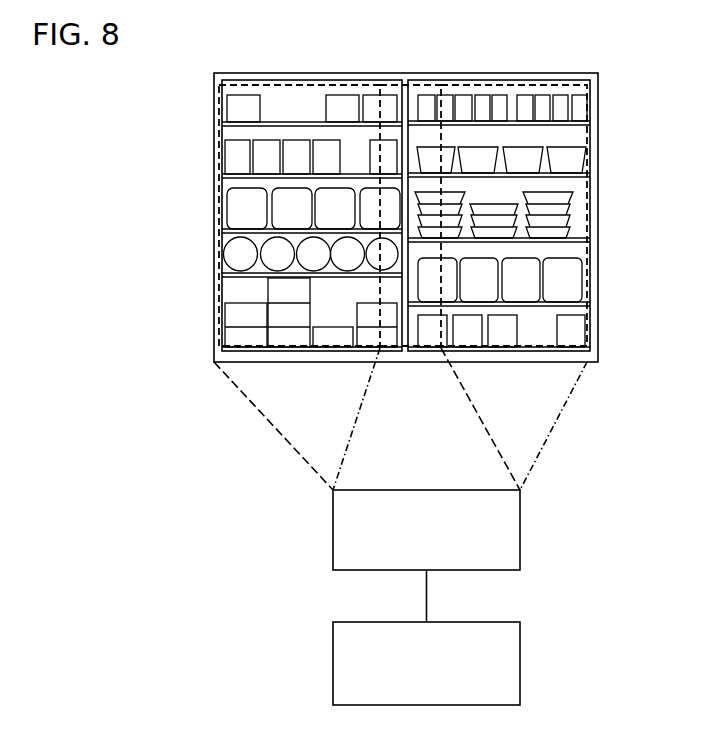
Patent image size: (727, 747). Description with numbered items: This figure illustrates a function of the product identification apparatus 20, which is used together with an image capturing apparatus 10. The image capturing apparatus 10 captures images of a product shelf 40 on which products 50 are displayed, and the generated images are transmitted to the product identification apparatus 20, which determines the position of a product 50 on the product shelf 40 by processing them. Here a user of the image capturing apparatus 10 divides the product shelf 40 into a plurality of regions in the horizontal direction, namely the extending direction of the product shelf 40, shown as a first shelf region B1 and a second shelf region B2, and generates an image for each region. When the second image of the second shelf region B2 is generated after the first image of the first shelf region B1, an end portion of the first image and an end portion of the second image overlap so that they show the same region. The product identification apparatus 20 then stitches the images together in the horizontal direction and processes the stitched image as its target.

The image capturing apparatus 10 is at (520, 533).
The product identification apparatus 20 is at (520, 667).
The product shelf 40 is at (219, 228).
The product 50 is at (584, 197).
The first shelf region B1 is at (219, 218).
The second shelf region B2 is at (586, 221).